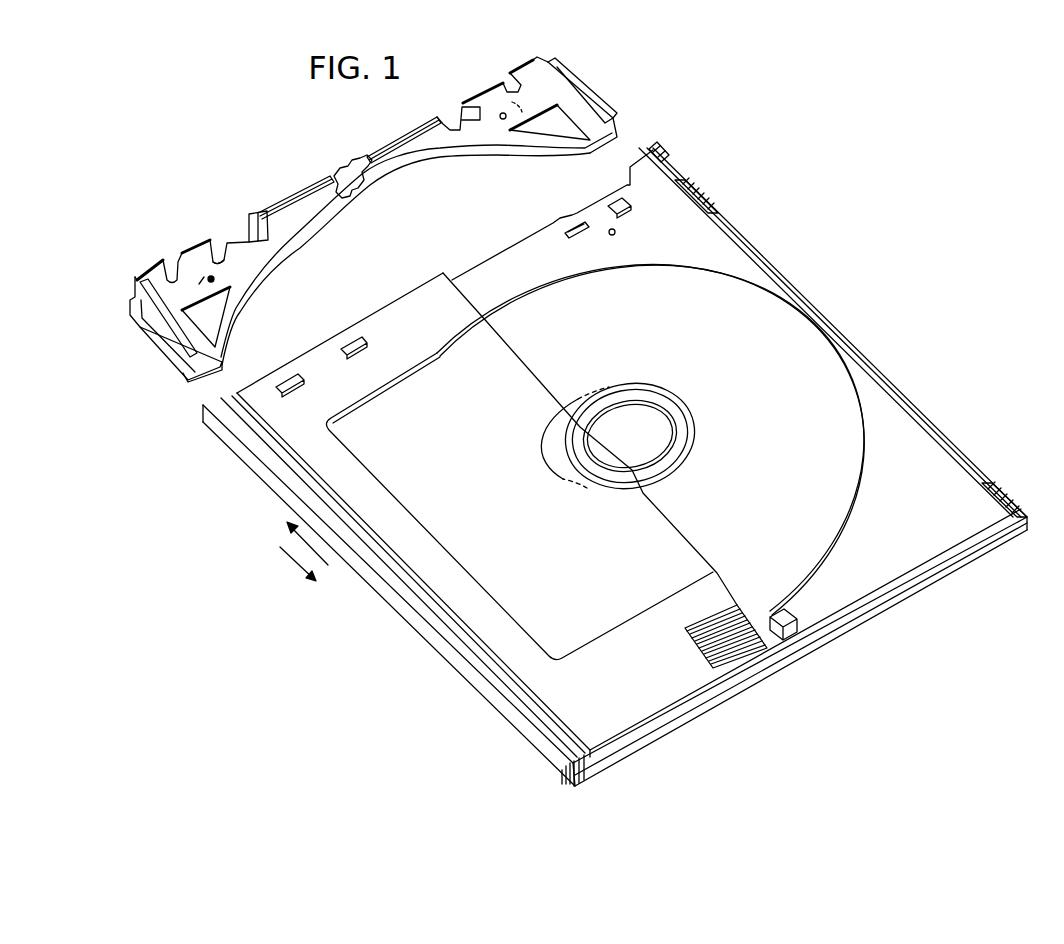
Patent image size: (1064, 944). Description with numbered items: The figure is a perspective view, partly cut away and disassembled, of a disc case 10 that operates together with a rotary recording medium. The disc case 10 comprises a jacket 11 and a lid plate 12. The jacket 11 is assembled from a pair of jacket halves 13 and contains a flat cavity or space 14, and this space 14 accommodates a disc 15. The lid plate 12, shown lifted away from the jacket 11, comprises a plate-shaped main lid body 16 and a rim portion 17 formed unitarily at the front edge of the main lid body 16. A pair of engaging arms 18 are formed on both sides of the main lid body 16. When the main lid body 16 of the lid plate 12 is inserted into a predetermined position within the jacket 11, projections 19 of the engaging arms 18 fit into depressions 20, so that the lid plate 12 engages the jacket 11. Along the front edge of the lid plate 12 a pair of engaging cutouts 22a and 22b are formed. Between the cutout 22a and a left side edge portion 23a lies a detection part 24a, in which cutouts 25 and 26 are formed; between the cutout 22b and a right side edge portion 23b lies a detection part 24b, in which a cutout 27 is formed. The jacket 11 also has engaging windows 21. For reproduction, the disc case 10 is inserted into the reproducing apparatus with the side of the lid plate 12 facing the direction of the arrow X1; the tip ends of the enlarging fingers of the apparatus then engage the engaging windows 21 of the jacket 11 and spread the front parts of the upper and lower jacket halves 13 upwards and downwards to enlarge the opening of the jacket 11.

The disc case 10 is at (710, 146).
The jacket 11 is at (420, 638).
The lid plate 12 is at (283, 197).
The jacket halves 13 is at (928, 577).
The flat cavity or space 14 is at (934, 446).
The disc 15 is at (862, 443).
The main lid body 16 is at (448, 146).
The rim portion 17 is at (400, 132).
The engaging arms 18 is at (158, 350).
The projections 19 is at (135, 325).
The depressions 20 is at (682, 165).
The engaging windows 21 is at (350, 344).
The engaging cutout 22a is at (238, 247).
The engaging cutout 22b is at (455, 128).
The left side edge portion 23a is at (137, 287).
The right side edge portion 23b is at (533, 60).
The detection part 24a is at (212, 229).
The detection part 24b is at (523, 55).
The cutout 25 is at (197, 283).
The cutout 26 is at (220, 262).
The cutout 27 is at (503, 92).